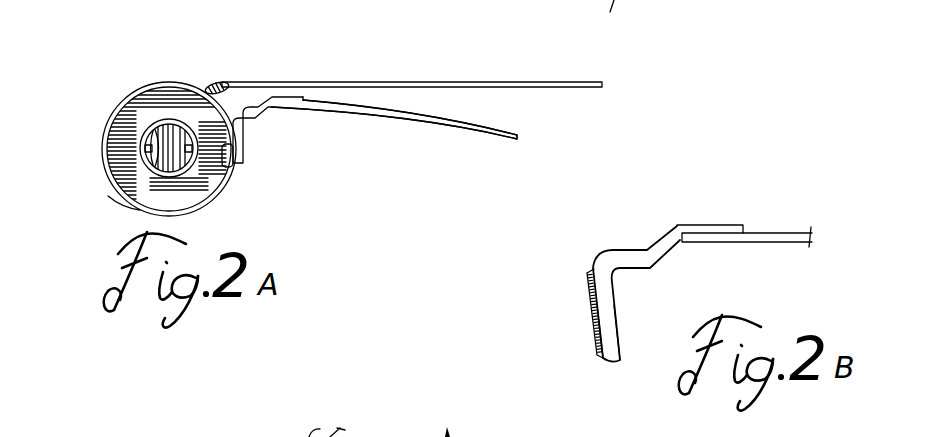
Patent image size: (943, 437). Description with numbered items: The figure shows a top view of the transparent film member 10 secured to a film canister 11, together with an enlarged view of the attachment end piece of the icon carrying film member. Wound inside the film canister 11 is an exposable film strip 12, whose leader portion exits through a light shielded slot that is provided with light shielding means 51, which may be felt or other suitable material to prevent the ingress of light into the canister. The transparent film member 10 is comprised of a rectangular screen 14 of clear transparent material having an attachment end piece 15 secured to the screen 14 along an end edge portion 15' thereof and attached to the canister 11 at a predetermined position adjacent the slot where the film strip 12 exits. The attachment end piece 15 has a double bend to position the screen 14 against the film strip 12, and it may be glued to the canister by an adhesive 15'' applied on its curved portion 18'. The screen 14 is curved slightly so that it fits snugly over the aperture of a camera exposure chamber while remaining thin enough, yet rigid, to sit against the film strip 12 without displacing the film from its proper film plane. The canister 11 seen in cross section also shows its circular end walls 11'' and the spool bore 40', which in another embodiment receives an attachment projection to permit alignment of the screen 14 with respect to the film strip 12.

In FIG. 2A, the transparent film member 10 is at (410, 116).
In FIG. 2A, the film canister 11 is at (168, 120).
In FIG. 2A, the circular end walls 11'' is at (103, 210).
In FIG. 2A, the exposable film strip 12 is at (527, 82).
In FIG. 2A, the rectangular screen 14 is at (477, 128).
In FIG. 2B, the rectangular screen 14 is at (773, 237).
In FIG. 2A, the attachment end piece 15 is at (270, 177).
In FIG. 2B, the attachment end piece 15 is at (566, 355).
In FIG. 2B, the end edge portion 15' is at (690, 194).
In FIG. 2B, the adhesive 15'' is at (548, 308).
In FIG. 2A, the curved portion 18' is at (295, 132).
In FIG. 2B, the curved portion 18' is at (660, 294).
In FIG. 2A, the spool bore 40' is at (130, 121).
In FIG. 2A, the light shielding means 51 is at (228, 83).